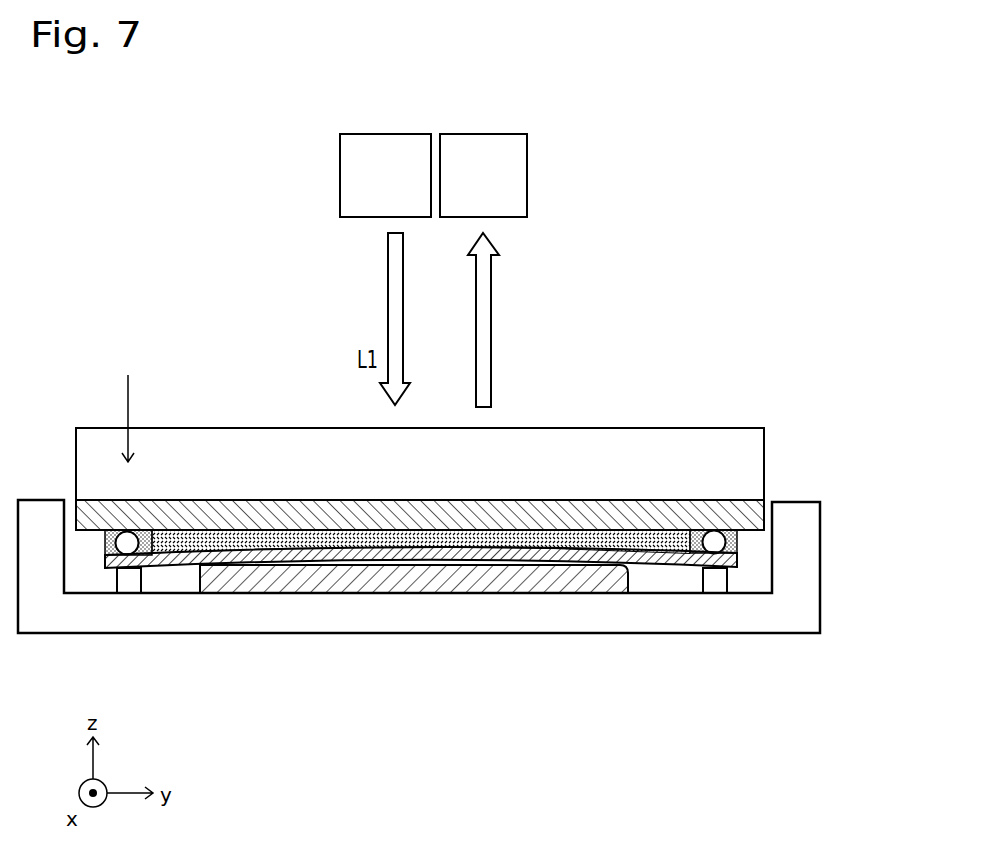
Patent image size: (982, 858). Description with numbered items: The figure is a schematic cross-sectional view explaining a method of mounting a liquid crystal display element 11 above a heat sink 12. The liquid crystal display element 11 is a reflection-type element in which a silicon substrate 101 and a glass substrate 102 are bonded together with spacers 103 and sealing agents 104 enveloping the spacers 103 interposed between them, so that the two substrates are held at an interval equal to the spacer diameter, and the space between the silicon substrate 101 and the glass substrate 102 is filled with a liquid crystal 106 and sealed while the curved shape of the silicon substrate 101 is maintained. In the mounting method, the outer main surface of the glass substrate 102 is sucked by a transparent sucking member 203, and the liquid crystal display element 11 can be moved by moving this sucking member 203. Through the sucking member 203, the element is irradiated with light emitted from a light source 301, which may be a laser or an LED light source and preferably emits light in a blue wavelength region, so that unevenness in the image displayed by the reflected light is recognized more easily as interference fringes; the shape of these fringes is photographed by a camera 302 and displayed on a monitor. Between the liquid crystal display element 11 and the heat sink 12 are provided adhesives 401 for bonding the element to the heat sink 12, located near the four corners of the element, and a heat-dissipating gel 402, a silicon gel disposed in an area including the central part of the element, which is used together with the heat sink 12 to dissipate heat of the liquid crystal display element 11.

The light source 301 is at (395, 134).
The camera 302 is at (484, 134).
The liquid crystal display element 11 is at (553, 389).
The heat sink 12 is at (568, 622).
The sucking member 203 is at (764, 462).
The glass substrate 102 is at (764, 515).
The liquid crystal 106 is at (633, 543).
The spacer 103 is at (737, 548).
The sealing agent 104 is at (737, 538).
The silicon substrate 101 is at (737, 565).
The heat-dissipating gel 402 is at (243, 585).
The adhesive 401 is at (715, 590).